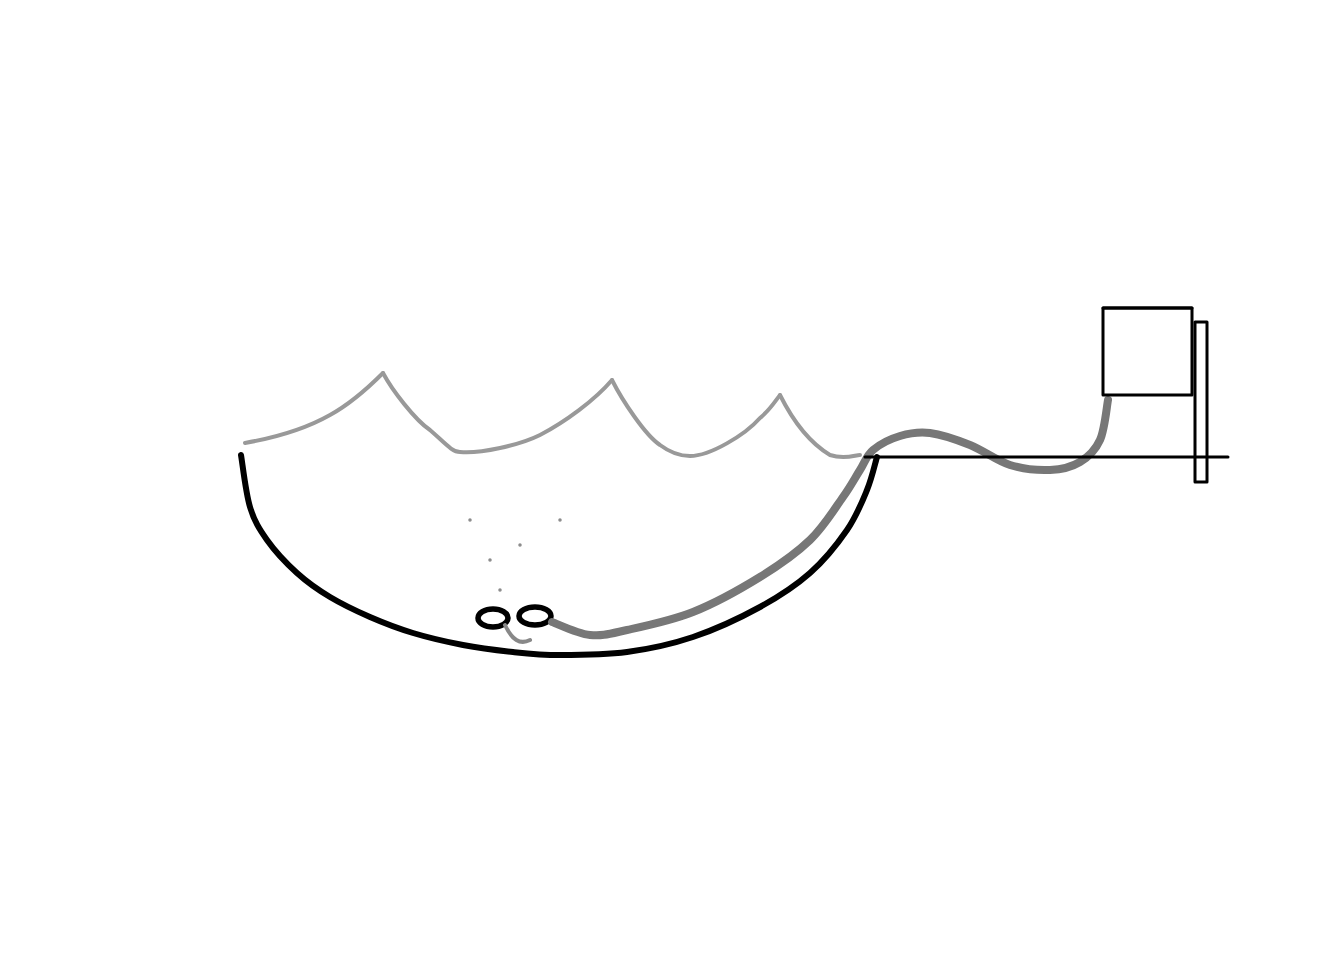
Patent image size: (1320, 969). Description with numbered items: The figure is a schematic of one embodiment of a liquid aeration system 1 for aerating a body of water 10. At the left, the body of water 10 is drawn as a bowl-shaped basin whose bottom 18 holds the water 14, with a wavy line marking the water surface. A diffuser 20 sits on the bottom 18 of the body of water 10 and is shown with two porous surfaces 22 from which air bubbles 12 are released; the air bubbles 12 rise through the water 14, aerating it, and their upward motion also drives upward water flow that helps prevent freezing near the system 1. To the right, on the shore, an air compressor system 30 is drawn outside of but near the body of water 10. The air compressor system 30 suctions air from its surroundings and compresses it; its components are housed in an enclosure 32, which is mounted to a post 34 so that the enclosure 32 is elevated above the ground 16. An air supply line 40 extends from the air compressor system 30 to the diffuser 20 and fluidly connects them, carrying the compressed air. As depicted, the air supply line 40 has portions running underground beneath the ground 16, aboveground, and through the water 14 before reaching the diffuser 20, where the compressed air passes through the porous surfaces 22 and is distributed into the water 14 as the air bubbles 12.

The liquid aeration system 1 is at (310, 193).
The body of water 10 is at (250, 417).
The air bubbles 12 is at (548, 590).
The water 14 is at (373, 420).
The ground 16 is at (1218, 455).
The bottom 18 is at (572, 648).
The diffuser 20 is at (455, 623).
The porous surface 22 is at (520, 625).
The air compressor system 30 is at (1148, 300).
The enclosure 32 is at (1170, 307).
The post 34 is at (1208, 340).
The air supply line 40 is at (918, 427).